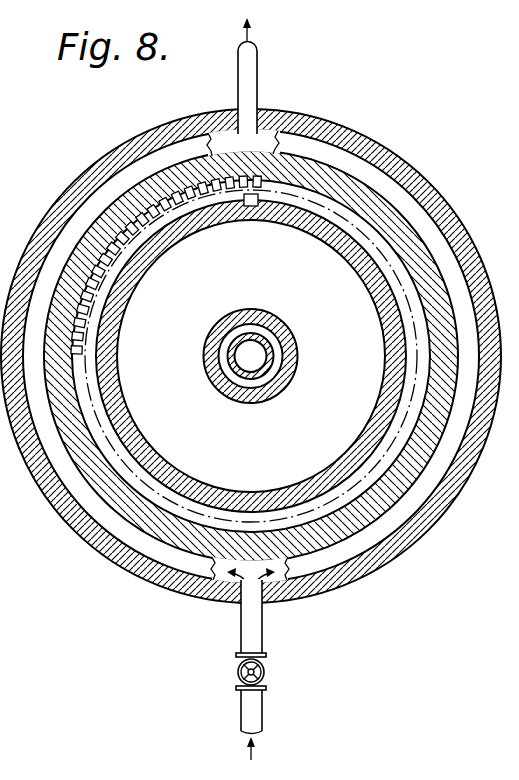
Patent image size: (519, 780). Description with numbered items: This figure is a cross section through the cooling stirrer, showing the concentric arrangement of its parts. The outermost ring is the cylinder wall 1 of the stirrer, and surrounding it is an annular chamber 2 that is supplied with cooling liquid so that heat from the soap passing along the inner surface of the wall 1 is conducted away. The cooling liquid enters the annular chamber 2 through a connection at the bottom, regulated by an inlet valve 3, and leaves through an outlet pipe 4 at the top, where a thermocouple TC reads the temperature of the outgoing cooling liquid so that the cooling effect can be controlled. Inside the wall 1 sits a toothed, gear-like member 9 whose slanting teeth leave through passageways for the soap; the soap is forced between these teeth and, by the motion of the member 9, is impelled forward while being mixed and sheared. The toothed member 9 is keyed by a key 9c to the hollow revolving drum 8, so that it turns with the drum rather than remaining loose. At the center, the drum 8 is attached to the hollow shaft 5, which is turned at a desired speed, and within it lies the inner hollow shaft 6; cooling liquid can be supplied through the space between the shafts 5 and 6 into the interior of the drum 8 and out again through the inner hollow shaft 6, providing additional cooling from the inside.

The wall 1 is at (393, 210).
The annular chambers 2 is at (228, 136).
The inlet valves 3 is at (266, 668).
The outlet pipes 4 is at (250, 63).
The hollow shaft 5 is at (290, 339).
The inner hollow shaft 6 is at (265, 364).
The hollow revolving drum 8 is at (100, 343).
The toothed members 9 is at (132, 232).
The keys 9c is at (250, 206).
The thermocouple TC is at (288, 79).